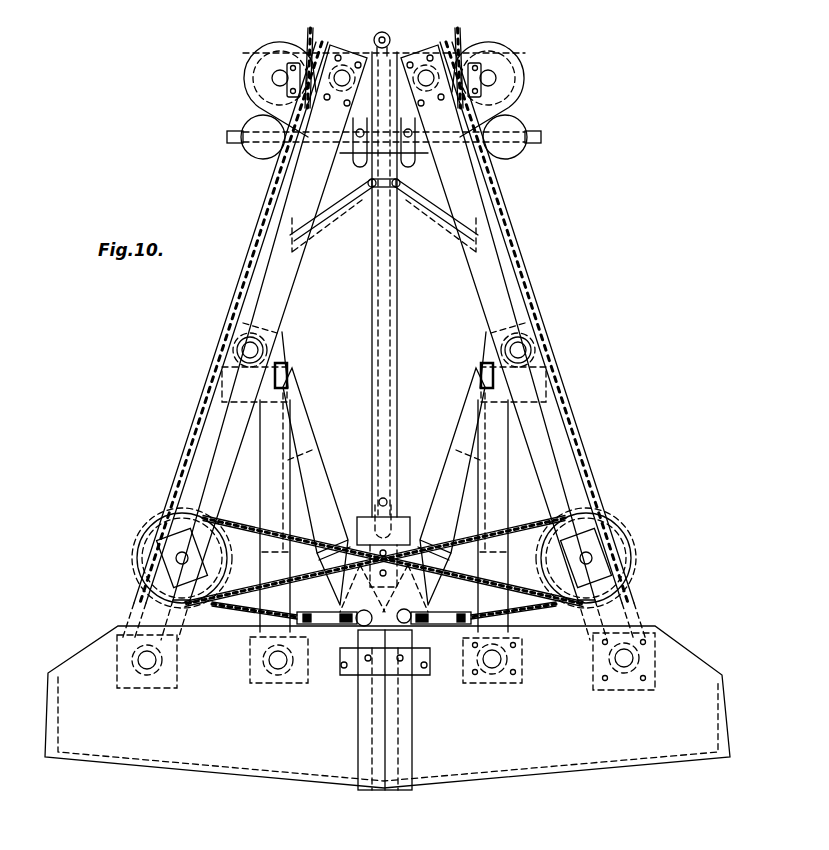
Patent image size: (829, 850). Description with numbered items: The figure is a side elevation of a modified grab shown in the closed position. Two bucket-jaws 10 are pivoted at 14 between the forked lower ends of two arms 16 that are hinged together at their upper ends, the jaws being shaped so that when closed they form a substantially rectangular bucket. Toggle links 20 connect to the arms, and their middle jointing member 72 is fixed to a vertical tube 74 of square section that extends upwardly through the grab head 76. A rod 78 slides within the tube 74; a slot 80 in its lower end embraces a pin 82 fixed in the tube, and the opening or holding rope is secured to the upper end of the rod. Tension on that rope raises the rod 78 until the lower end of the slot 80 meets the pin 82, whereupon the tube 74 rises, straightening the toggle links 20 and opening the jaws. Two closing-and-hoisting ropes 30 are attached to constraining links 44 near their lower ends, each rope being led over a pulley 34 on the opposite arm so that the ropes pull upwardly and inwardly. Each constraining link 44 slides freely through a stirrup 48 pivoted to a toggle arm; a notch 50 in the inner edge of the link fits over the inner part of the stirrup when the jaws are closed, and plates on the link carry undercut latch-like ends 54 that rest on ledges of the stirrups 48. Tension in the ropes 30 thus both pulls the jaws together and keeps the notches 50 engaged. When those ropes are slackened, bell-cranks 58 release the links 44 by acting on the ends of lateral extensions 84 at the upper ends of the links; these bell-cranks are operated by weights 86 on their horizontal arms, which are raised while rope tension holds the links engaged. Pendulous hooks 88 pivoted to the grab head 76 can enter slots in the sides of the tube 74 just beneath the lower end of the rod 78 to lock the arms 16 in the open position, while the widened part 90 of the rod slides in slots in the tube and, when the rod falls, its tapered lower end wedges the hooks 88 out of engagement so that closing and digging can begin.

The bucket-jaw 10 is at (181, 746).
The pivot 14 is at (147, 672).
The arm 16 is at (232, 408).
The toggle link 20 is at (313, 450).
The closing-and-hoisting rope 30 is at (210, 358).
The pulley 34 is at (153, 543).
The constraining link 44 is at (270, 497).
The stirrup 48 is at (289, 376).
The notch 50 is at (275, 366).
The undercut latch-like end 54 is at (562, 365).
The bell-crank 58 is at (400, 192).
The middle jointing member 72 is at (420, 626).
The vertical tube 74 is at (398, 390).
The grab head 76 is at (495, 92).
The rod 78 is at (391, 40).
The slot 80 is at (395, 505).
The pin 82 is at (390, 497).
The lateral extension 84 is at (340, 218).
The weight 86 is at (256, 145).
The pendulous hook 88 is at (352, 165).
The widened part 90 is at (380, 500).